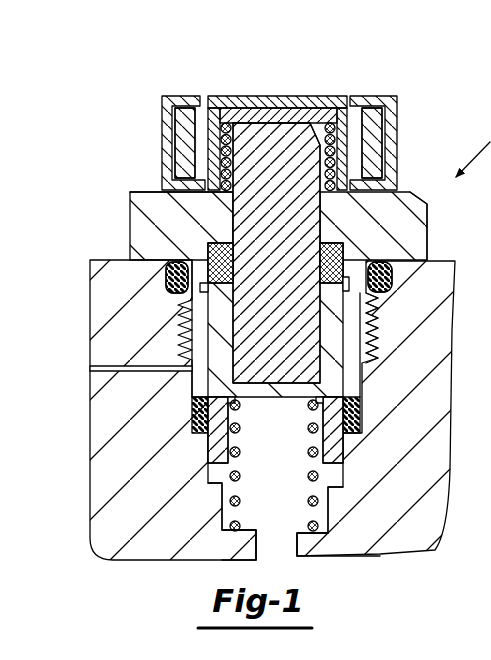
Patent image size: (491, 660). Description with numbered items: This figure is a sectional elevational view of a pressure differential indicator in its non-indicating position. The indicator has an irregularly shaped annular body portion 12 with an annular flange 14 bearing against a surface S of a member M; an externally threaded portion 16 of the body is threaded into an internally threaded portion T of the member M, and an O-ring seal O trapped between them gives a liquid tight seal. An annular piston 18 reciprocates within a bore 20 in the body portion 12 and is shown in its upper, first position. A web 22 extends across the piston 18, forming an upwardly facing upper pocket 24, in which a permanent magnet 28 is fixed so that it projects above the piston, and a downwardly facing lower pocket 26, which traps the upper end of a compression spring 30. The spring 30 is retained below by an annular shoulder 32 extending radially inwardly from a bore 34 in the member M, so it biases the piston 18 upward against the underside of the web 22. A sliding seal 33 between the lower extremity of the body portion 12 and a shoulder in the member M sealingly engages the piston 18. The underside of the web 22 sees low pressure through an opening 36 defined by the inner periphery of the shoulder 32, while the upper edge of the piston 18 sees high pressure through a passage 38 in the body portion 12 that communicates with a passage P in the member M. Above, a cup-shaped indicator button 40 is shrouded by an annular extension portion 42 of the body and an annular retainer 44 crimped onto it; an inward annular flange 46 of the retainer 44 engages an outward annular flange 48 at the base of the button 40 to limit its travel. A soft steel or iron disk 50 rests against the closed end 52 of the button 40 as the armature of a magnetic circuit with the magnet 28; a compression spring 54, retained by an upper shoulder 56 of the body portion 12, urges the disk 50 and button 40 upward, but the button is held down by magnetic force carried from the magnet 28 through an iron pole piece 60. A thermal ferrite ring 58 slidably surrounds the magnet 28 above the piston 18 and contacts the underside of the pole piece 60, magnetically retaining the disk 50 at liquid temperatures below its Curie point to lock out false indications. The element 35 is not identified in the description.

The annular body portion 12 is at (392, 208).
The annular flange 14 is at (428, 222).
The externally threaded portion 16 is at (371, 480).
The annular piston 18 is at (382, 552).
The bore 20 is at (168, 386).
The web 22 is at (258, 398).
The upper pocket 24 is at (192, 306).
The lower pocket 26 is at (282, 468).
The permanent magnet 28 is at (380, 314).
The compression spring 30 is at (243, 479).
The annular shoulder 32 is at (222, 543).
The sliding seal 33 is at (358, 478).
The bore 34 is at (220, 503).
The lower housing 35 is at (104, 527).
The opening 36 is at (288, 543).
The passage 38 is at (160, 373).
The indicator button 40 is at (347, 96).
The annular extension portion 42 is at (185, 133).
The annular retainer 44 is at (392, 96).
The annular flange 46 is at (197, 96).
The annular flange 48 is at (215, 175).
The disk 50 is at (308, 96).
The closed end 52 is at (255, 96).
The compression spring 54 is at (333, 143).
The upper shoulder 56 is at (372, 187).
The thermal ferrite ring 58 is at (208, 243).
The pole piece 60 is at (233, 218).
The O-ring seal O is at (163, 285).
The passage P is at (490, 483).
The surface S is at (437, 255).
The internally threaded portion T is at (390, 311).
The member M is at (462, 290).